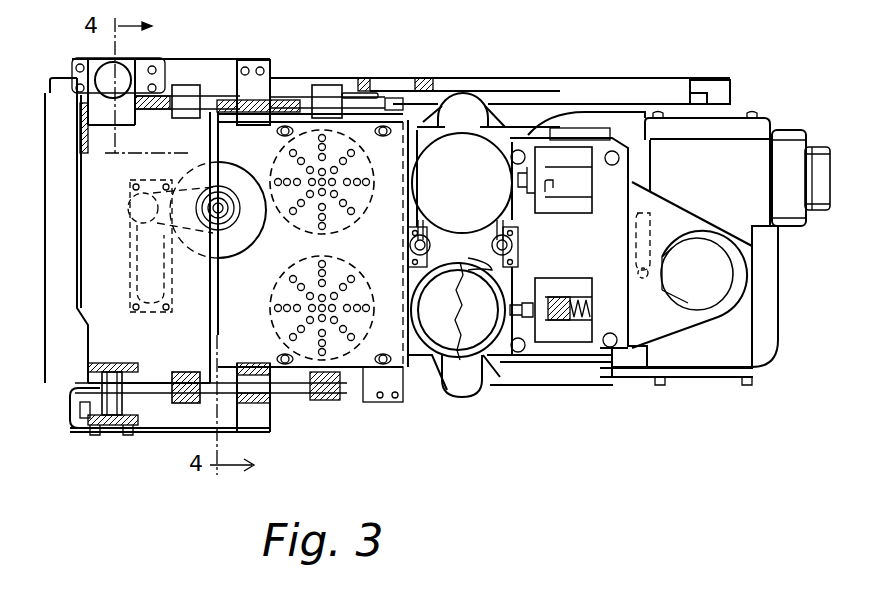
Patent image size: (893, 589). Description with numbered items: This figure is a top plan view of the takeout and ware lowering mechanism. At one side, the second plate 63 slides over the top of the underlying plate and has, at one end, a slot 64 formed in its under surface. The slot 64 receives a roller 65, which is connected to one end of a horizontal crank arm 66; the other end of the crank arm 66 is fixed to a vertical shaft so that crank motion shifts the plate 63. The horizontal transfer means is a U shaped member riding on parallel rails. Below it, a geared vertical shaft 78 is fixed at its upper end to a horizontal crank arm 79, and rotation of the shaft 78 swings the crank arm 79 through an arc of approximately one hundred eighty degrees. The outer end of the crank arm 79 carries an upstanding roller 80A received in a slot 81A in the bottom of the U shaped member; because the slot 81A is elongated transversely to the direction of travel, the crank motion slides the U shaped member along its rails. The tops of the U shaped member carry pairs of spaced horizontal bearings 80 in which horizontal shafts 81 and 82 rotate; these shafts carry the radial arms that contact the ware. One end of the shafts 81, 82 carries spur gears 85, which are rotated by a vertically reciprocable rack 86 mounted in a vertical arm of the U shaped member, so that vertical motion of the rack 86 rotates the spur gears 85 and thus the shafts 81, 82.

The second plate 63 is at (682, 213).
The slot 64 is at (650, 207).
The roller 65 is at (625, 270).
The horizontal crank arm 66 is at (716, 290).
The vertical shaft 78 is at (272, 110).
The horizontal crank arm 79 is at (215, 195).
The horizontal bearings 80 is at (272, 398).
The upstanding roller 80A is at (135, 215).
The horizontal shaft 81 is at (338, 402).
The slot 81A is at (137, 248).
The horizontal shaft 82 is at (300, 98).
The spur gears 85 is at (97, 402).
The rack 86 is at (113, 420).